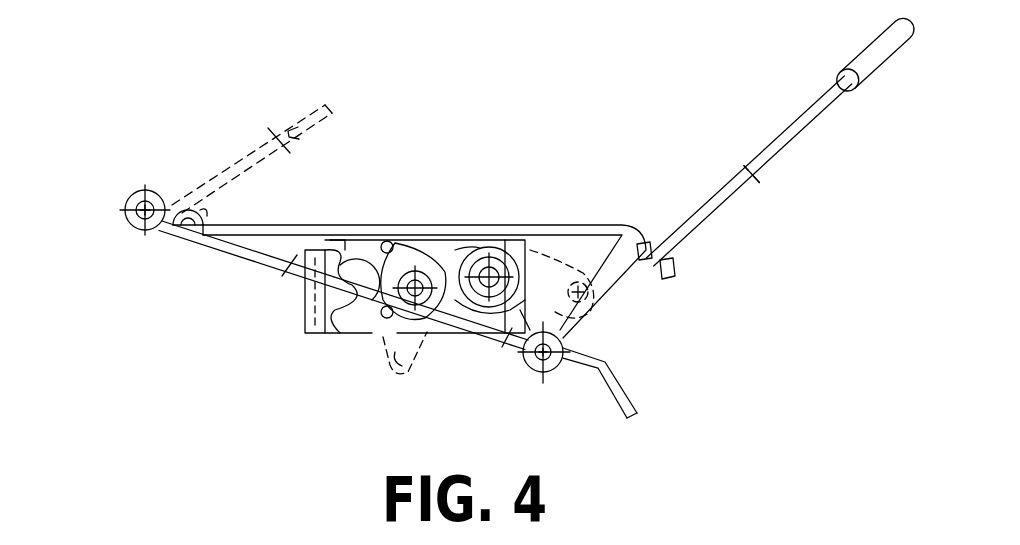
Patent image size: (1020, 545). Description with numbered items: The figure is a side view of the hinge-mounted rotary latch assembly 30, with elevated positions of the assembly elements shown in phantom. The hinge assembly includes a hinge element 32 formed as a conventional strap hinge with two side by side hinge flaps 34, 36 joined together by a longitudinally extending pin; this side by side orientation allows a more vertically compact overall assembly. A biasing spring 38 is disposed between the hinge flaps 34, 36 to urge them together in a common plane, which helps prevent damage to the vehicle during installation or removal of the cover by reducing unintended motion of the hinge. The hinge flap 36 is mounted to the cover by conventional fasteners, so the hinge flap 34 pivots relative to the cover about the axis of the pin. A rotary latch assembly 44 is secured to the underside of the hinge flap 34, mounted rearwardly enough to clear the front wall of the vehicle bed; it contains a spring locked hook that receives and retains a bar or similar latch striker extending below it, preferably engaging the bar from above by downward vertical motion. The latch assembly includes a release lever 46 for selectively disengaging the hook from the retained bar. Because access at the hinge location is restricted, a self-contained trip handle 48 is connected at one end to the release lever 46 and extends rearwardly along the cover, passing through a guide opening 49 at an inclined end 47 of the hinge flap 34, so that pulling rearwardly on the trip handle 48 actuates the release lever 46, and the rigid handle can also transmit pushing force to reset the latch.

The cart assembly 30 is at (212, 312).
The hinge element 32 is at (292, 198).
The hinge flap 34 is at (587, 226).
The hinge flap 36 is at (620, 377).
The biasing spring 38 is at (130, 223).
The rotary latch assembly 44 is at (306, 318).
The release lever 46 is at (550, 262).
The inclined end 47 is at (672, 278).
The trip handle 48 is at (810, 127).
The guide opening 49 is at (675, 260).